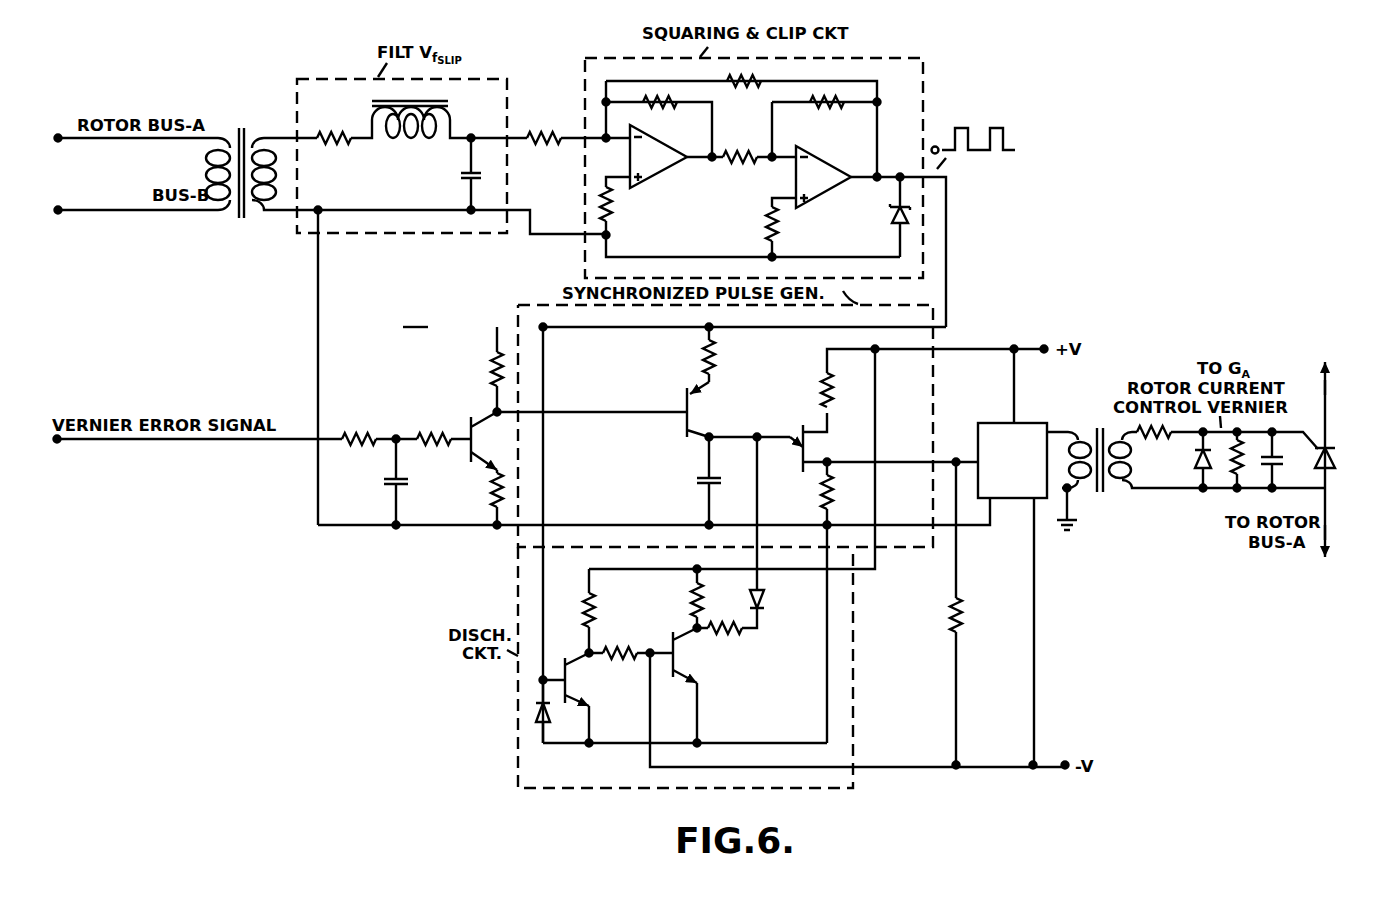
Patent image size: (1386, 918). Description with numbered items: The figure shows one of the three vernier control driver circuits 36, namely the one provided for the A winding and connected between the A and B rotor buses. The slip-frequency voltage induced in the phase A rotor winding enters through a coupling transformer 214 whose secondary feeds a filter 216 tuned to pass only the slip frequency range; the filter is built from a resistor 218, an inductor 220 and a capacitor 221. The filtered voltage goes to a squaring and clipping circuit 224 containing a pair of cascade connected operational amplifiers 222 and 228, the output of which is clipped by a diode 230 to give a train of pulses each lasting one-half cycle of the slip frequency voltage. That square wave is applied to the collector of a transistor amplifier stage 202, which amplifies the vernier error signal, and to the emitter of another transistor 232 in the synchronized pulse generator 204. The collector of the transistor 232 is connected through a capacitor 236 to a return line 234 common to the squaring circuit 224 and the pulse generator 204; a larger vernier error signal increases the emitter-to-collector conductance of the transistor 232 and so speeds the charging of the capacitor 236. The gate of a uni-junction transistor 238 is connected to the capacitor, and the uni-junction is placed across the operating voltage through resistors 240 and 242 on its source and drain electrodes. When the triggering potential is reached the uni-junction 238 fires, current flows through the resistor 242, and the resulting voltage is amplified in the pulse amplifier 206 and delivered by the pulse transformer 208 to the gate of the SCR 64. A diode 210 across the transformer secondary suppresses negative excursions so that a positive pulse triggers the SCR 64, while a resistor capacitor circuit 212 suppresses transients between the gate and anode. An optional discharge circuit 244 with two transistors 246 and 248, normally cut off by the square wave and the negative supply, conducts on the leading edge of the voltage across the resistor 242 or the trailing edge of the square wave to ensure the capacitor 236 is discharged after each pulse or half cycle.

The coupling transformer 214 is at (241, 220).
The filter 216 is at (370, 235).
The resistor 218 is at (330, 146).
The inductor 220 is at (395, 134).
The filter capacitor 221 is at (465, 180).
The operational amplifier 222 is at (660, 174).
The squaring and clipping circuit 224 is at (781, 192).
The operational amplifier 228 is at (814, 195).
The diode 230 is at (892, 222).
The control driver circuit 36 is at (373, 367).
The synchronized pulse generator 204 is at (540, 303).
The transistor amplifier stage 202 is at (468, 427).
The return line 234 is at (357, 529).
The transistor 232 is at (680, 418).
The capacitor 236 is at (705, 486).
The uni-junction transistor 238 is at (797, 431).
The resistor 240 is at (820, 392).
The resistor 242 is at (820, 497).
The pulse amplifier 206 is at (1030, 422).
The pulse transformer 208 is at (1100, 496).
The diode 210 is at (1195, 459).
The resistor capacitor circuit 212 is at (1232, 480).
The SCR 64 is at (1338, 462).
The transistor 246 is at (577, 652).
The transistor 248 is at (668, 646).
The discharge circuit 244 is at (795, 789).